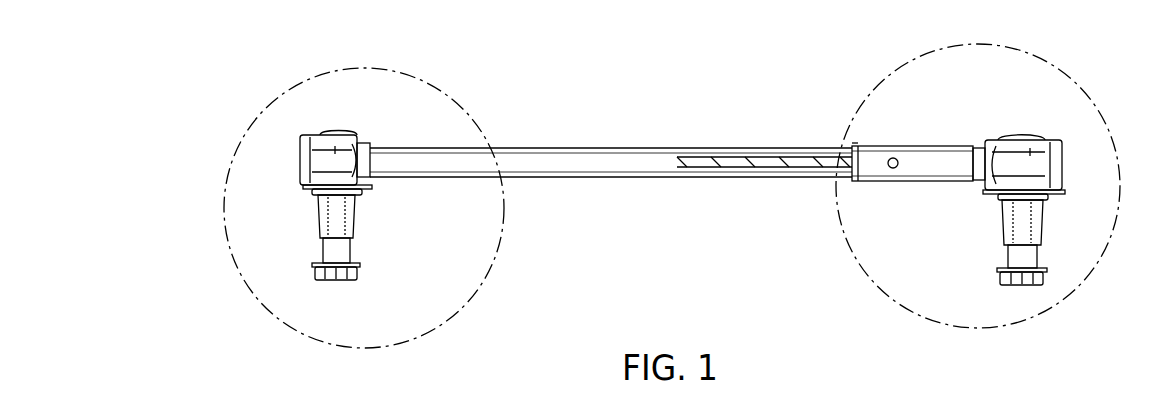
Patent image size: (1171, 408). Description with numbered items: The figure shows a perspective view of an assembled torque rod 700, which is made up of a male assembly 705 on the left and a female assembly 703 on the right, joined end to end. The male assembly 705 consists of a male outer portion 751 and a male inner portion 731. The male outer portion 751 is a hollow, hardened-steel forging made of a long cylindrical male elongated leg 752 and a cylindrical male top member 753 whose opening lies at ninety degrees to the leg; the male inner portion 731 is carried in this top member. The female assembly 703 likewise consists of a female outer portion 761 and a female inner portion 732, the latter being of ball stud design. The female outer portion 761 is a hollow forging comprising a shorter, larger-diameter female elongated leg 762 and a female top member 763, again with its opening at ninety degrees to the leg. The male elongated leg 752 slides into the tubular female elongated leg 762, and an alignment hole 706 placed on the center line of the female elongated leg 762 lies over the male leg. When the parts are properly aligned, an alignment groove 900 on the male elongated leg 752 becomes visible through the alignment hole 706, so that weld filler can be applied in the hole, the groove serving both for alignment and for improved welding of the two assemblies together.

The torque rod 700 is at (693, 308).
The female assembly 703 is at (845, 182).
The male assembly 705 is at (835, 142).
The alignment hole 706 is at (890, 169).
The male inner portion 731 is at (315, 223).
The female inner portion 732 is at (1047, 222).
The male outer portion 751 is at (607, 150).
The male elongated leg 752 is at (657, 182).
The male top member 753 is at (292, 155).
The female outer portion 761 is at (1020, 130).
The female elongated leg 762 is at (919, 202).
The female top member 763 is at (1065, 148).
The alignment groove 900 is at (700, 162).